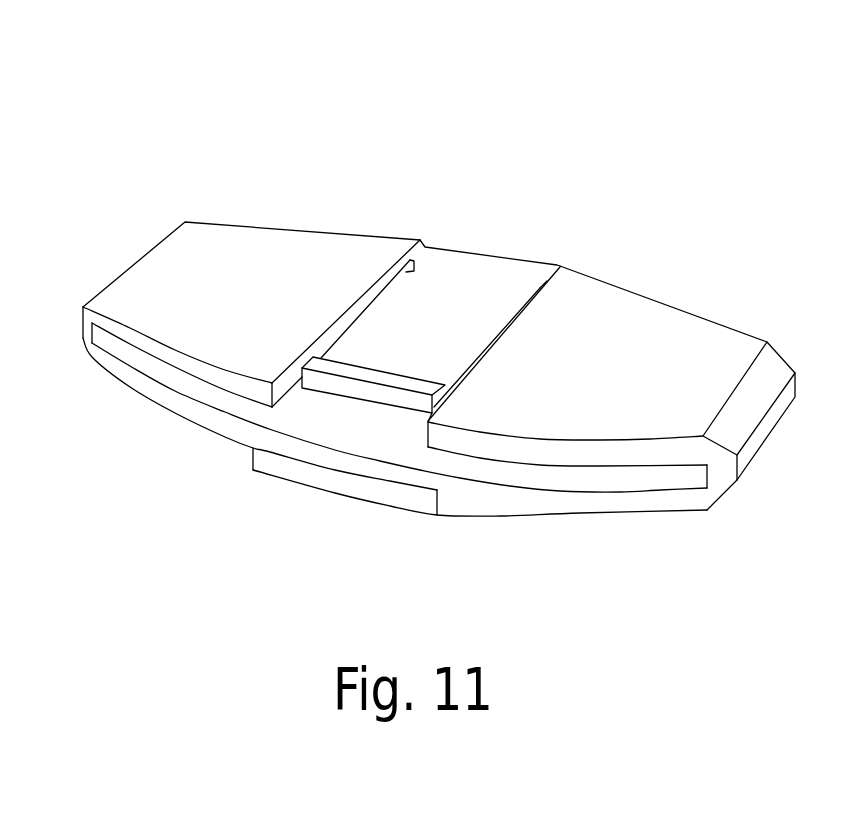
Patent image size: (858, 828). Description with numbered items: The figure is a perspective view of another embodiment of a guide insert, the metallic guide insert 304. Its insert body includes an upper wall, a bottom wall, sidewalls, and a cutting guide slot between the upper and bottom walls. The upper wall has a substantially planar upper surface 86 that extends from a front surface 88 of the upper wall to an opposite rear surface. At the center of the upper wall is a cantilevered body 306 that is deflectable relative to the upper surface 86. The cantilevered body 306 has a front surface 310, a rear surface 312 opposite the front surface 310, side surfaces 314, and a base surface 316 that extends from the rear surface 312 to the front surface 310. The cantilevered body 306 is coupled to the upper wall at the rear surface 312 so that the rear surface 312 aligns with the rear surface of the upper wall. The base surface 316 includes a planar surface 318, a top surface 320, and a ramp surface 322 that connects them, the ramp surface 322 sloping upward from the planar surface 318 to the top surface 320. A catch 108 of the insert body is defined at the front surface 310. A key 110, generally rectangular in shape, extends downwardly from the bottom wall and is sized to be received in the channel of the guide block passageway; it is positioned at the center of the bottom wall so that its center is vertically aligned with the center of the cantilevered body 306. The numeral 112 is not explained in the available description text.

The metallic guide insert 304 is at (622, 141).
The upper surface 86 is at (142, 270).
The front surface 88 is at (186, 369).
The catch 108 is at (360, 397).
The key 110 is at (257, 457).
The channel end 112 is at (593, 515).
The cantilevered body 306 is at (478, 305).
The front surface 310 is at (320, 387).
The rear surface 312 is at (528, 258).
The side surfaces 314 is at (442, 398).
The base surface 316 is at (402, 302).
The planar surface 318 is at (505, 267).
The top surface 320 is at (407, 383).
The ramp surface 322 is at (455, 361).